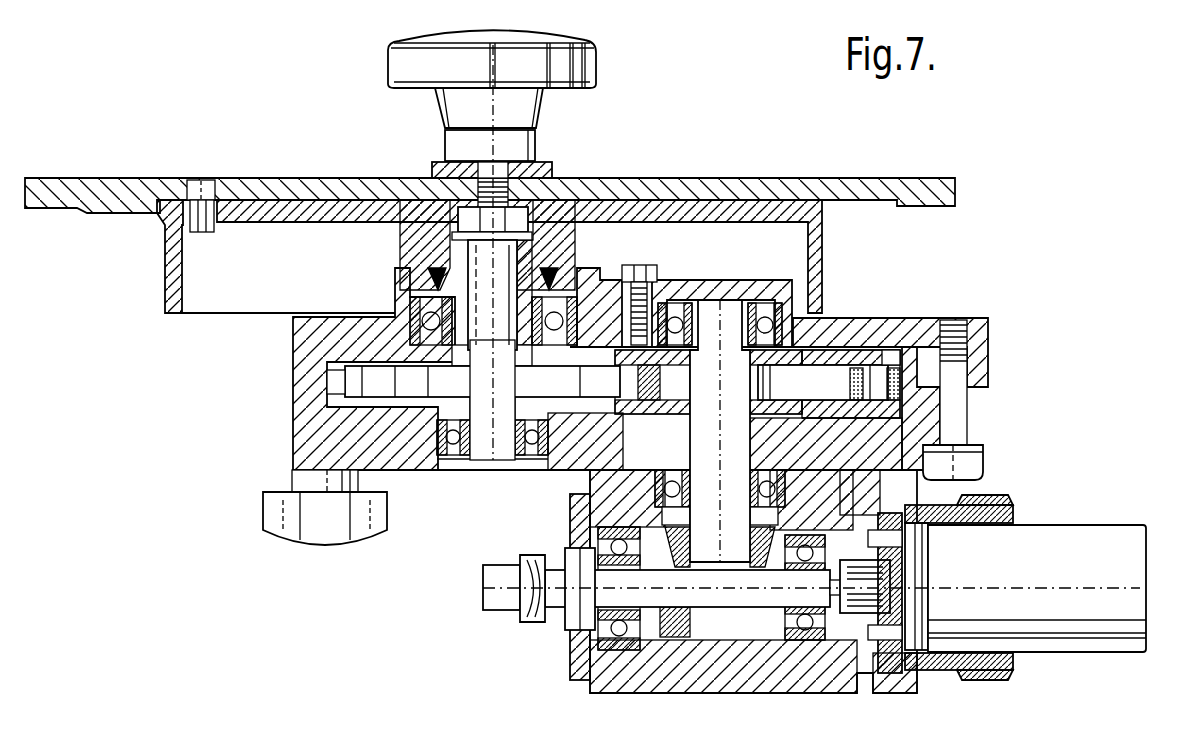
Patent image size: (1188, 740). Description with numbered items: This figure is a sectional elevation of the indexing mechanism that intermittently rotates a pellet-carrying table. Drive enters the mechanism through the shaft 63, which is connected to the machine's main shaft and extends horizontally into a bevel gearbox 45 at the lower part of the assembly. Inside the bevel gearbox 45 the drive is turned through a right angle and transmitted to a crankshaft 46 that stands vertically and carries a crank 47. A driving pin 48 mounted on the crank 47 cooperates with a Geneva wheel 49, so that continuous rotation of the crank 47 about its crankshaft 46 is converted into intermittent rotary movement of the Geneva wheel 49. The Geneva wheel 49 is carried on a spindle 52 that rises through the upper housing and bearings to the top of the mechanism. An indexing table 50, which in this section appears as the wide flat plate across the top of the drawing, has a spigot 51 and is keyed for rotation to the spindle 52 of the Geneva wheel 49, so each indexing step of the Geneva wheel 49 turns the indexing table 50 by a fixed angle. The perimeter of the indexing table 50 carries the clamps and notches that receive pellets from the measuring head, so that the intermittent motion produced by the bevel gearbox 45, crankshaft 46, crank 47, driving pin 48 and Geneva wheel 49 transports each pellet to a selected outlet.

The bevel gearbox 45 is at (690, 678).
The crankshaft 46 is at (714, 322).
The crank 47 is at (830, 376).
The driving pin 48 is at (873, 378).
The Geneva wheel 49 is at (380, 381).
The indexing table 50 is at (293, 153).
The spigot 51 is at (165, 279).
The spindle 52 is at (483, 289).
The shaft 63 is at (503, 579).